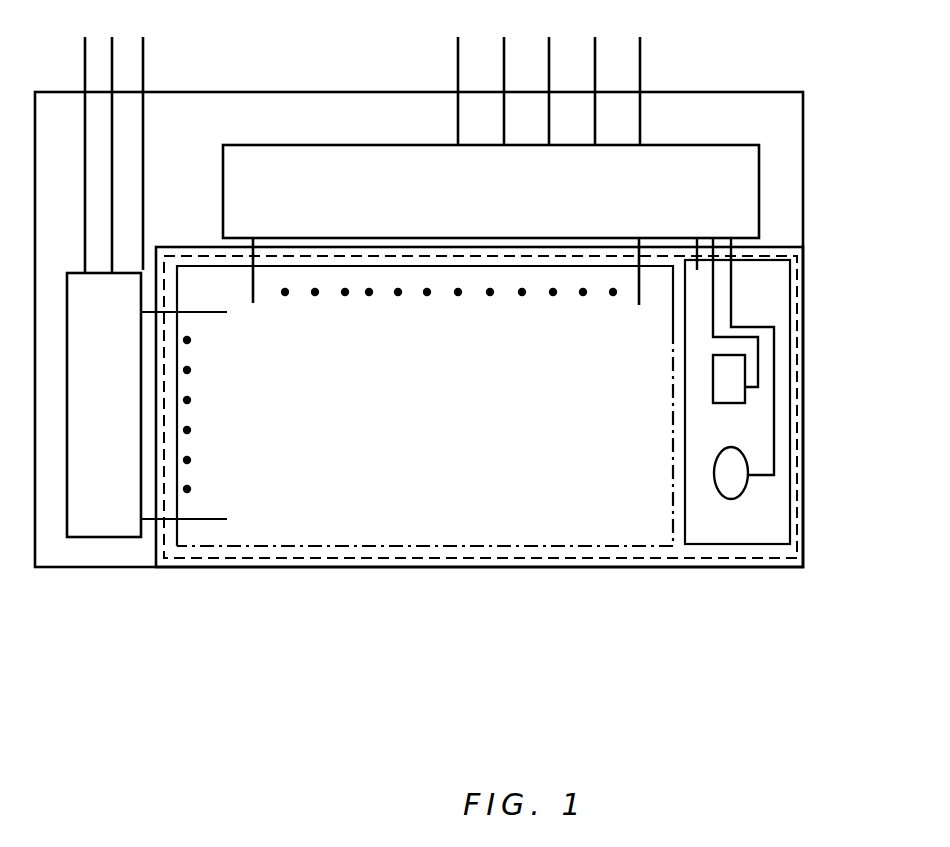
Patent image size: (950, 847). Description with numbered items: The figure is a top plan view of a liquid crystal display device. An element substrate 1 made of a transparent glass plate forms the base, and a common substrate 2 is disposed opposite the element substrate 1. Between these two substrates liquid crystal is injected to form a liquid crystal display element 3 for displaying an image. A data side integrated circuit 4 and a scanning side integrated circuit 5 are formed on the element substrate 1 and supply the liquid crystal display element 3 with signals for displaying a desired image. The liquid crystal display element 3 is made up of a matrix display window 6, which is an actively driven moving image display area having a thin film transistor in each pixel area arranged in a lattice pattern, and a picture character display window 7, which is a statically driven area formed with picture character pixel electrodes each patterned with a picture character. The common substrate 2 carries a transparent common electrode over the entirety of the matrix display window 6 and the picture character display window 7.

The element substrate 1 is at (140, 568).
The common substrate 2 is at (770, 249).
The liquid crystal display element 3 is at (540, 567).
The data side integrated circuit 4 is at (718, 143).
The scanning side integrated circuit 5 is at (93, 537).
The matrix display window 6 is at (377, 567).
The picture character display window 7 is at (760, 545).